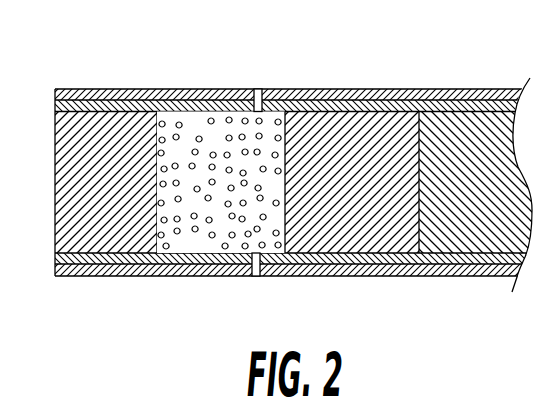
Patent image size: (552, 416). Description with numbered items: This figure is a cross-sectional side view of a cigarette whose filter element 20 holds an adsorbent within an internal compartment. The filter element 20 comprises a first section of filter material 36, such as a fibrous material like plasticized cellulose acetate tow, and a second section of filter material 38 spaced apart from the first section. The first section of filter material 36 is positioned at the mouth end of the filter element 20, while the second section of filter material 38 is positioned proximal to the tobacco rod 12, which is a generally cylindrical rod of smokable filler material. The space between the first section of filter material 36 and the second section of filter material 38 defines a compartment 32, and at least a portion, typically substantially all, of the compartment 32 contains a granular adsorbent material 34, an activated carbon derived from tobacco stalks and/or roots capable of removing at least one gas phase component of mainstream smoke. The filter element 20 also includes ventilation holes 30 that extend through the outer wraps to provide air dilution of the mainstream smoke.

The tobacco rod 12 is at (459, 228).
The filter element 20 is at (88, 306).
The ventilation holes 30 is at (256, 89).
The compartment 32 is at (158, 112).
The adsorbent material 34 is at (212, 216).
The first section of filter material 36 is at (93, 110).
The second section of filter material 38 is at (376, 225).